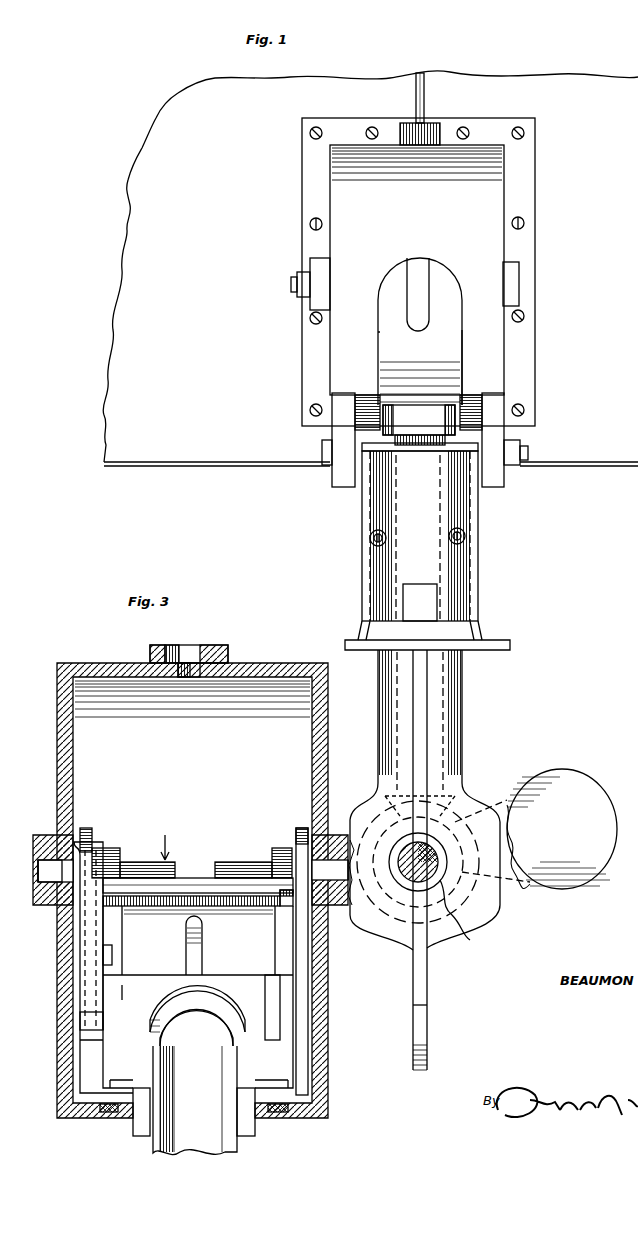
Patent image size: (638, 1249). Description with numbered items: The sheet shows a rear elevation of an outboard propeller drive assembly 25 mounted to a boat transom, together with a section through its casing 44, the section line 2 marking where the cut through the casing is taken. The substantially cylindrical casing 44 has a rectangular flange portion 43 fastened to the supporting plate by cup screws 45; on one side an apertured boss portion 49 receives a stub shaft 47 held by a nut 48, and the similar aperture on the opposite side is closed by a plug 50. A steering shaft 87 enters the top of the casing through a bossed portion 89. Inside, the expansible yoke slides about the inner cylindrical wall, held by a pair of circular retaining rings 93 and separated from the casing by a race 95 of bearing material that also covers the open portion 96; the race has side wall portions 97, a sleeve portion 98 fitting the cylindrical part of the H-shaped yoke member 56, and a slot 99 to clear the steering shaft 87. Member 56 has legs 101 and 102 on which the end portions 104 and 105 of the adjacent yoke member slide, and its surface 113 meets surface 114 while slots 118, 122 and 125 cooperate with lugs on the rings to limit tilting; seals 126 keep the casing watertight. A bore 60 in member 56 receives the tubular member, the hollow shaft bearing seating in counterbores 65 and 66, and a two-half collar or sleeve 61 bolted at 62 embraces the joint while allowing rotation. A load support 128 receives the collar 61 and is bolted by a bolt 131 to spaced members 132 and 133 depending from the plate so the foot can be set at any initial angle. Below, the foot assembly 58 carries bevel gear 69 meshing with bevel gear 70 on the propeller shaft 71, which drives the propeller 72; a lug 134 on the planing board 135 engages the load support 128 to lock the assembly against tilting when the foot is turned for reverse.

In FIG. 1, the section line 2 is at (420, 62).
In FIG. 1, the outboard propeller drive assembly 25 is at (322, 490).
In FIG. 1, the rectangular flange portion 43 is at (520, 250).
In FIG. 1, the casing 44 is at (490, 212).
In FIG. 1, the cup screws 45 is at (518, 126).
In FIG. 1, the stub shaft 47 is at (291, 285).
In FIG. 1, the nut 48 is at (303, 270).
In FIG. 1, the apertured boss portion 49 is at (512, 288).
In FIG. 3, the apertured boss portion 49 is at (45, 835).
In FIG. 3, the plug 50 is at (55, 882).
In FIG. 1, the member of the expansible yoke 56 is at (440, 400).
In FIG. 1, the foot assembly 58 is at (470, 752).
In FIG. 3, the bore 60 is at (195, 1100).
In FIG. 1, the collar or sleeve 61 is at (452, 572).
In FIG. 1, the bolts 62 is at (465, 537).
In FIG. 3, the counterbore 65 is at (165, 1040).
In FIG. 3, the larger counterbore 66 is at (146, 1018).
In FIG. 1, the bevel gear 69 is at (452, 782).
In FIG. 1, the bevel gear 70 is at (488, 905).
In FIG. 1, the propeller shaft 71 is at (467, 916).
In FIG. 1, the propeller 72 is at (590, 790).
In FIG. 1, the shaft 87 is at (412, 100).
In FIG. 1, the bossed portion 89 is at (430, 128).
In FIG. 3, the bossed portion 89 is at (152, 652).
In FIG. 3, the retaining rings 93 is at (103, 928).
In FIG. 1, the race 95 is at (400, 359).
In FIG. 3, the race 95 is at (166, 840).
In FIG. 1, the open portion 96 is at (382, 336).
In FIG. 3, the side wall portions 97 is at (86, 830).
In FIG. 1, the sleeve portion 98 is at (419, 425).
In FIG. 3, the sleeve portion 98 is at (254, 1128).
In FIG. 1, the slot 99 is at (412, 315).
In FIG. 3, the slot 99 is at (185, 878).
In FIG. 3, the leg 101 is at (112, 850).
In FIG. 3, the leg 102 is at (280, 850).
In FIG. 3, the end portion 104 is at (128, 870).
In FIG. 3, the end portion 105 is at (262, 866).
In FIG. 3, the surface 113 is at (152, 978).
In FIG. 3, the surface 114 is at (220, 907).
In FIG. 3, the slots 118 is at (278, 998).
In FIG. 3, the slot 122 is at (200, 956).
In FIG. 3, the slots 125 is at (284, 900).
In FIG. 3, the seals 126 is at (100, 1112).
In FIG. 1, the load support 128 is at (480, 505).
In FIG. 1, the bolt 131 is at (524, 452).
In FIG. 1, the spaced member 132 is at (336, 431).
In FIG. 1, the spaced member 133 is at (494, 480).
In FIG. 1, the lug 134 is at (418, 612).
In FIG. 1, the planing board 135 is at (500, 642).